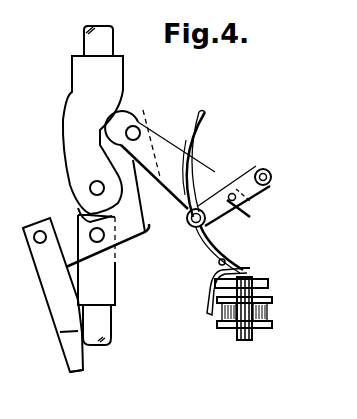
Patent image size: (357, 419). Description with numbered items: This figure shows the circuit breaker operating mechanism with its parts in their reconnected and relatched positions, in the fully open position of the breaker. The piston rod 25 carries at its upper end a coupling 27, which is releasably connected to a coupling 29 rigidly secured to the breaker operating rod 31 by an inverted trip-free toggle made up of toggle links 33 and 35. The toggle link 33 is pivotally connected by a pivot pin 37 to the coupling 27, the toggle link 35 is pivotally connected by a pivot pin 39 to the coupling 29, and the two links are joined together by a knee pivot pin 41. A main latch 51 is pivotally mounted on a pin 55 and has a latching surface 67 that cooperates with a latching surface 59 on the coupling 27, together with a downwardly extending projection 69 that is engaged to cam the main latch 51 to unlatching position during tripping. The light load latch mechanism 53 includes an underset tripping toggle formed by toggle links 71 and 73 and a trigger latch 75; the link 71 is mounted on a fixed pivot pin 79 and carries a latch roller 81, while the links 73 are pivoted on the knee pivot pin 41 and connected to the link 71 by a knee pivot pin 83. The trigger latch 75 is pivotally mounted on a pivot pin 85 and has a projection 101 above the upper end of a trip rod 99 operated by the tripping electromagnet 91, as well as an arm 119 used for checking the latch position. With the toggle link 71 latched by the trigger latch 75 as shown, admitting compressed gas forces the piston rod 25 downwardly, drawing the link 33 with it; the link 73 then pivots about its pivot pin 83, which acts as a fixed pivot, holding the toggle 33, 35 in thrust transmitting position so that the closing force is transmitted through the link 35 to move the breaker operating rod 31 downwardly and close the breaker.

The piston rod 25 is at (108, 326).
The coupling 27 is at (107, 292).
The coupling 29 is at (113, 74).
The breaker operating rod 31 is at (102, 49).
The toggle link 33 is at (116, 270).
The toggle link 35 is at (160, 147).
The pivot pin 37 is at (103, 239).
The pivot pin 39 is at (89, 187).
The knee pivot pin 41 is at (150, 121).
The main latch 51 is at (46, 289).
The light load latch mechanism 53 is at (244, 116).
The pin 55 is at (33, 241).
The latching surface 59 is at (81, 212).
The latching surface 67 is at (60, 332).
The projection 69 is at (70, 366).
The toggle link 71 is at (247, 191).
The toggle link 73 is at (215, 172).
The trigger latch 75 is at (208, 247).
The fixed pivot pin 79 is at (258, 170).
The latch roller 81 is at (188, 223).
The knee pivot pin 83 is at (240, 208).
The pivot pin 85 is at (213, 267).
The tripping electromagnet 91 is at (297, 320).
The trip rod 99 is at (250, 281).
The projection 101 is at (242, 270).
The arm 119 is at (208, 295).